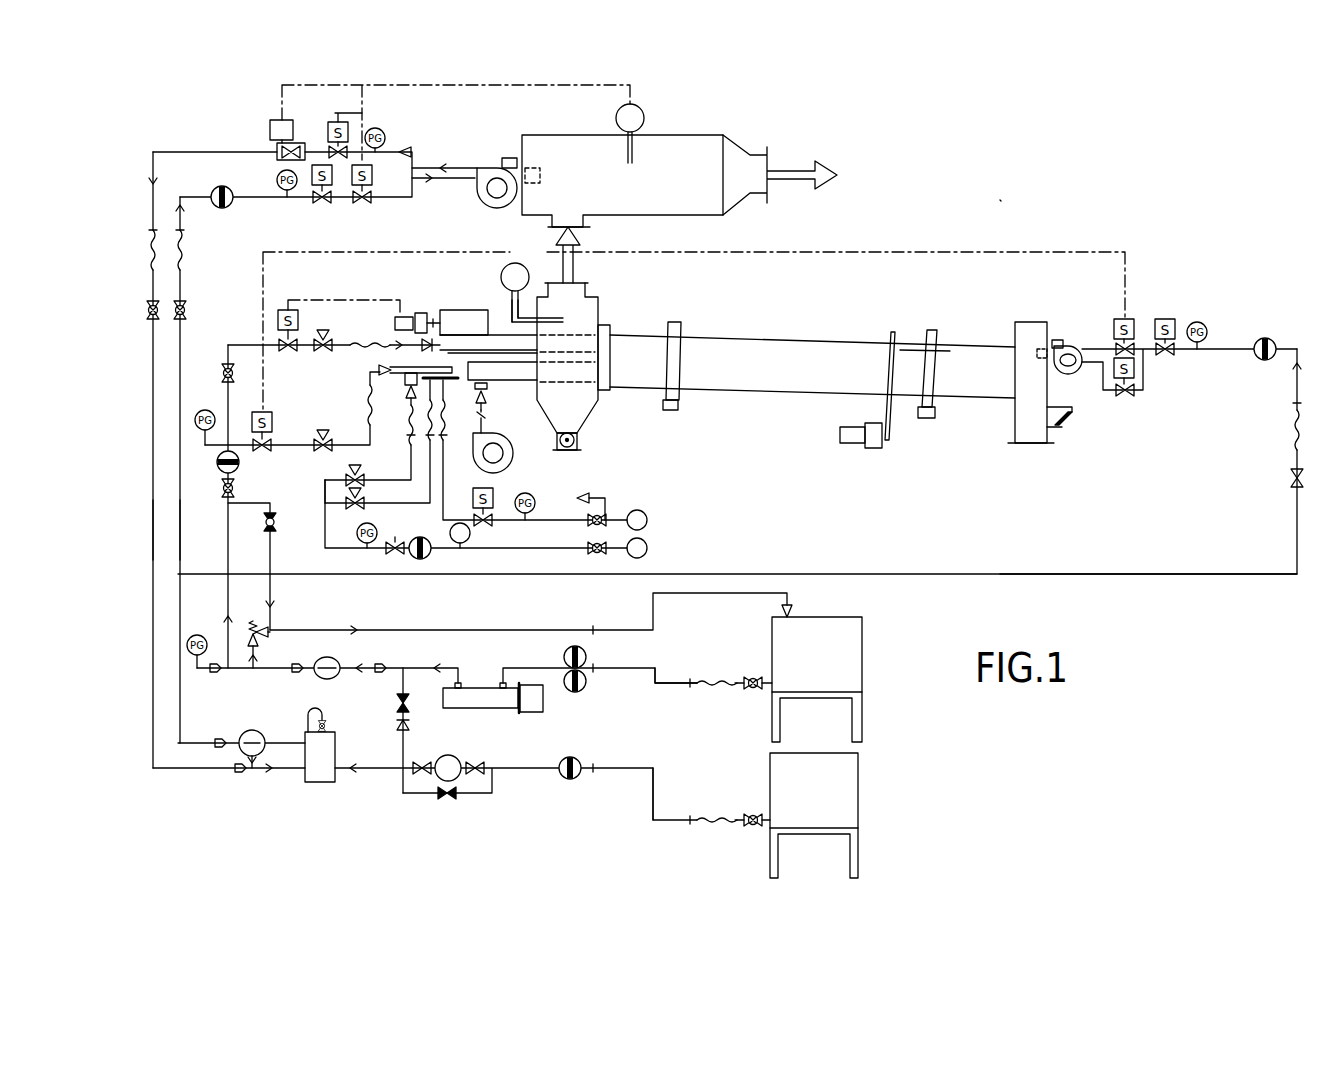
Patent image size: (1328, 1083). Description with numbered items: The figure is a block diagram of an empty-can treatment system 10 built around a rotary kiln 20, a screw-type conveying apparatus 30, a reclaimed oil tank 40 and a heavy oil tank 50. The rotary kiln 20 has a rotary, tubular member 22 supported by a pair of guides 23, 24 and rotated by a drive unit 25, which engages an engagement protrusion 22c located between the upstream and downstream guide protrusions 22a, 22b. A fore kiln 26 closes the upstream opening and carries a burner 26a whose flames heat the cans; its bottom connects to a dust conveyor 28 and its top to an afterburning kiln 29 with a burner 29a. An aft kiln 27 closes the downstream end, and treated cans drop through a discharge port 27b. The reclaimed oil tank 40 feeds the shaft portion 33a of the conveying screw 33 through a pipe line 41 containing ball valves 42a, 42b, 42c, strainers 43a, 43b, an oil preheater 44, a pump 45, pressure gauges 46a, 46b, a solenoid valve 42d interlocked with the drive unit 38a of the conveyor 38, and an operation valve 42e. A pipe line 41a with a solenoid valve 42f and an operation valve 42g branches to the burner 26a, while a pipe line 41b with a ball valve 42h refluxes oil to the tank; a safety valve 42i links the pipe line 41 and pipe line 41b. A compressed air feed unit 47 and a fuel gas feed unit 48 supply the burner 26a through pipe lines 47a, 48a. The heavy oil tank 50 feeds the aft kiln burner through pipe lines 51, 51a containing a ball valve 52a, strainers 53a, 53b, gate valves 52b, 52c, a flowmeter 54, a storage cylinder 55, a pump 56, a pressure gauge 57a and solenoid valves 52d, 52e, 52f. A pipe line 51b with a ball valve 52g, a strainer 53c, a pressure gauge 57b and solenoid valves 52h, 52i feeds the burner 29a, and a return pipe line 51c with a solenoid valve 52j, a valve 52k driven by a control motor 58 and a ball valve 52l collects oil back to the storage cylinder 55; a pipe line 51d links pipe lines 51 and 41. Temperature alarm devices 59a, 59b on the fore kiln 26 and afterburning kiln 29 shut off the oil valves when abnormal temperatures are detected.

The empty-can treatment system 10 is at (1033, 173).
The rotary kiln 20 is at (826, 320).
The rotary, tubular member 22 is at (754, 335).
The guide protrusion 22a is at (682, 350).
The guide protrusion 22b is at (938, 347).
The engagement protrusion 22c is at (890, 364).
The guide 23 is at (680, 403).
The guide 24 is at (927, 420).
The drive unit 25 is at (858, 445).
The fore kiln 26 is at (600, 301).
The burner 26a is at (488, 387).
The aft kiln 27 is at (1030, 319).
The discharge port 27b is at (1066, 426).
The dust conveyor 28 is at (576, 440).
The afterburning kiln 29 is at (719, 134).
The burner 29a is at (490, 160).
The screw-type conveying apparatus 30 is at (507, 318).
The conveying screw 33 is at (480, 417).
The shaft portion 33a is at (432, 354).
The conveyor 38 is at (466, 308).
The drive unit 38a is at (428, 294).
The reclaimed oil tank 40 is at (863, 687).
The pipe line 41 is at (628, 683).
The pipe line 41a is at (338, 477).
The pipe line 41b is at (550, 630).
The ball valve 42a is at (747, 676).
The ball valve 42b is at (231, 490).
The ball valve 42c is at (226, 366).
The solenoid valve 42d is at (288, 352).
The operation valve 42e is at (323, 352).
The solenoid valve 42f is at (274, 425).
The operation valve 42g is at (323, 460).
The ball valve 42h is at (273, 524).
The safety valve 42i is at (261, 638).
The strainer 43a is at (562, 657).
The strainer 43b is at (218, 466).
The oil preheater 44 is at (506, 708).
The pump 45 is at (336, 660).
The pressure gauge 46a is at (196, 635).
The pressure gauge 46b is at (202, 410).
The compressed air feed unit 47 is at (647, 548).
The pipe line 47a is at (533, 550).
The fuel gas feed unit 48 is at (647, 520).
The pipe line 48a is at (533, 522).
The heavy oil tank 50 is at (859, 805).
The pipe line 51 is at (626, 778).
The pipe line 51a is at (1025, 574).
The pipe line 51b is at (180, 520).
The pipe line 51c is at (152, 500).
The pipe line 51d is at (402, 709).
The ball valve 52a is at (747, 812).
The gate valve 52b is at (478, 762).
The gate valve 52c is at (423, 760).
The solenoid valve 52d is at (1170, 316).
The solenoid valve 52e is at (1132, 319).
The solenoid valve 52f is at (1126, 395).
The ball valve 52g is at (190, 306).
The solenoid valve 52h is at (322, 204).
The solenoid valve 52i is at (362, 204).
The solenoid valve 52j is at (328, 131).
The valve 52k is at (276, 150).
The ball valve 52l is at (148, 307).
The strainer 53a is at (574, 755).
The strainer 53b is at (1265, 338).
The strainer 53c is at (216, 186).
The flowmeter 54 is at (454, 756).
The storage cylinder 55 is at (335, 742).
The pump 56 is at (249, 730).
The pressure gauge 57a is at (1204, 327).
The pressure gauge 57b is at (375, 128).
The control motor 58 is at (271, 121).
The temperature alarm device 59a is at (527, 252).
The temperature alarm device 59b is at (644, 114).